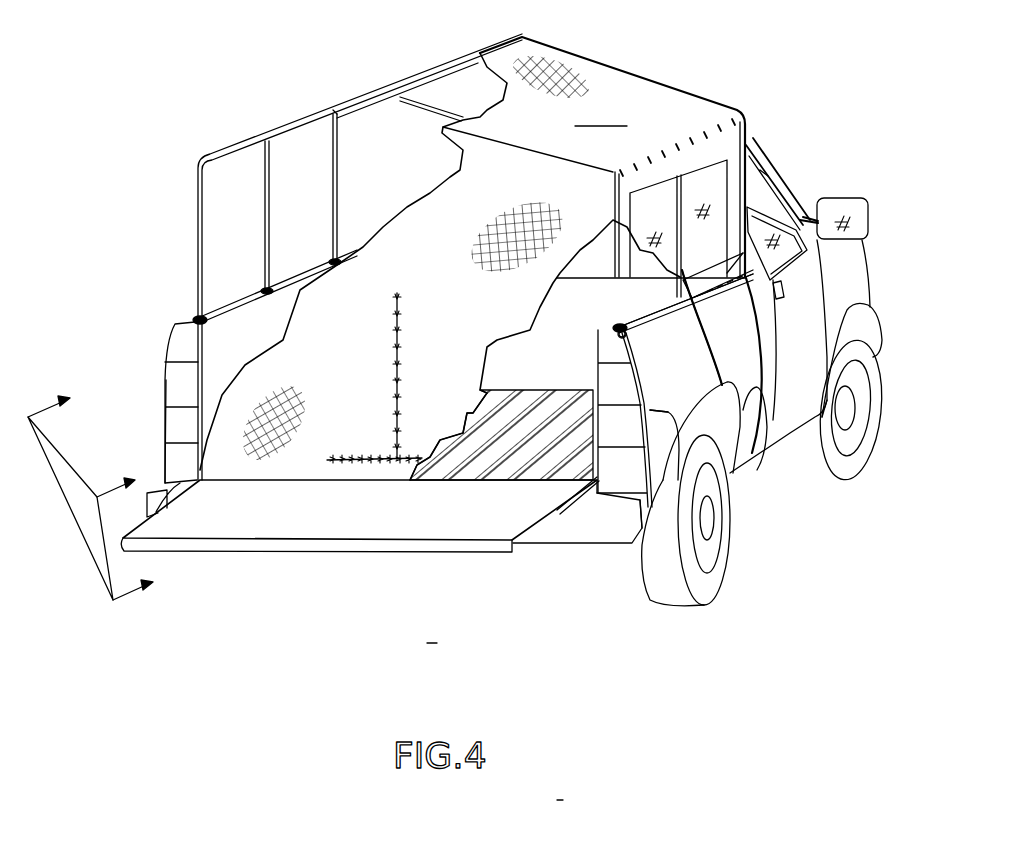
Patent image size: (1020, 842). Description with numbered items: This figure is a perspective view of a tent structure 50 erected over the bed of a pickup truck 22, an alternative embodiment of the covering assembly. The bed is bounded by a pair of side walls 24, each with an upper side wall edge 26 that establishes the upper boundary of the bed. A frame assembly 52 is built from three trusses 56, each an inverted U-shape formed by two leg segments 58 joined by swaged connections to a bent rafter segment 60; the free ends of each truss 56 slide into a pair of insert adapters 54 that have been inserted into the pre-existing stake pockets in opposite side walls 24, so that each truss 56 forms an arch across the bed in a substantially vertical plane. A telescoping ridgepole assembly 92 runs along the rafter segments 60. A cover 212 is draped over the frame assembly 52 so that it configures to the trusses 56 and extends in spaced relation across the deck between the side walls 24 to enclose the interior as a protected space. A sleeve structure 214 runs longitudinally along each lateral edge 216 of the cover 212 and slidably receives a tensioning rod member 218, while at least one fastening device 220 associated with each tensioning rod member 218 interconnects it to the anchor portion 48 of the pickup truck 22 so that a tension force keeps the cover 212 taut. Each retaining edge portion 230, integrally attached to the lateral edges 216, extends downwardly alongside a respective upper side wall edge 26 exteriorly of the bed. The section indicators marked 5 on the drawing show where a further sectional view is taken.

The pickup truck 22 is at (793, 168).
The side wall 24 is at (165, 387).
The upper side wall edge 26 is at (618, 331).
The anchor portion 48 is at (660, 500).
The tent structure 50 is at (628, 64).
The frame assembly 52 is at (203, 165).
The insert adapter 54 is at (195, 320).
The truss 56 is at (197, 203).
The leg segment 58 is at (333, 260).
The rafter segment 60 is at (337, 110).
The ridgepole assembly 92 is at (433, 77).
The cover 212 is at (601, 114).
The sleeve structure 214 is at (705, 298).
The lateral edge 216 is at (727, 275).
The tensioning rod member 218 is at (633, 333).
The fastening device 220 is at (660, 418).
The retaining edge portion 230 is at (717, 303).
The section line 5- 5 is at (103, 492).